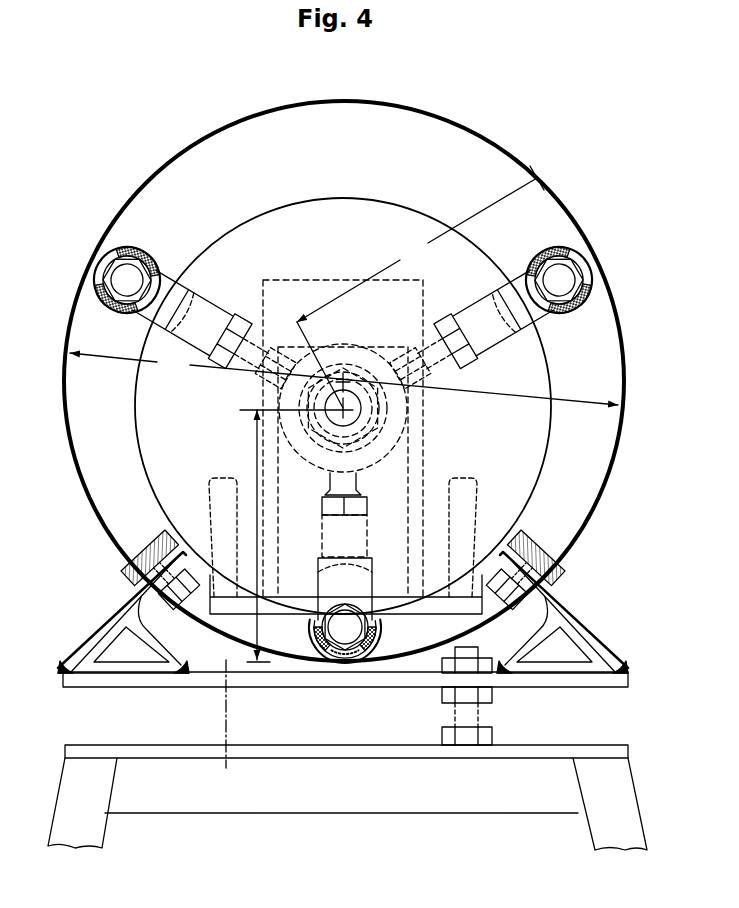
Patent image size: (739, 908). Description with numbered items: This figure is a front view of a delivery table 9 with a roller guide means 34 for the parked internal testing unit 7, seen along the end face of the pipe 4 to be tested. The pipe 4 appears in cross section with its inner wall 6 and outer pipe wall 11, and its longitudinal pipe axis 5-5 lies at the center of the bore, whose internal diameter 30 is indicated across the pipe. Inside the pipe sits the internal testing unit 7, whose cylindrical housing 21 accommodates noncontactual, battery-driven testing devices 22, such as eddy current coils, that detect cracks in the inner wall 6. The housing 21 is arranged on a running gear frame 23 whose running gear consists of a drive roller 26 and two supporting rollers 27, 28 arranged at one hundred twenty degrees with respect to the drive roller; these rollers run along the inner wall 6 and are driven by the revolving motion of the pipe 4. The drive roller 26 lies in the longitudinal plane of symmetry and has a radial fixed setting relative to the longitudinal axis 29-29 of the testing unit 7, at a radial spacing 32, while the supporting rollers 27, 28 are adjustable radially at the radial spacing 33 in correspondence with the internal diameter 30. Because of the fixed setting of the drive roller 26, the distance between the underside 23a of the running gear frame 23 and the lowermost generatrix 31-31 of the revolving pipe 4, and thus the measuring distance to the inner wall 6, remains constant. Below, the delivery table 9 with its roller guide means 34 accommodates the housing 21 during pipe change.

The pipe 4 is at (481, 134).
The inner wall 6 is at (452, 128).
The internal testing unit 7 is at (353, 192).
The delivery table 9 is at (300, 768).
The outer pipe wall 11 is at (589, 524).
The cylindrical housing 21 is at (275, 207).
The testing devices 22 is at (312, 280).
The running gear frame 23 is at (219, 607).
The underside of the running gear frame 23a is at (230, 620).
The drive roller 26 is at (378, 652).
The supporting roller 27 is at (126, 247).
The supporting roller 28 is at (594, 312).
The longitudinal axis of the testing unit 29-29 is at (356, 414).
The internal diameter 30 is at (344, 378).
The lowermost generatrix 31-31 is at (348, 657).
The radial spacing of the drive roller 32 is at (294, 536).
The radial spacing of the supporting rollers 33 is at (420, 287).
The roller guide means 34 is at (124, 581).
The longitudinal pipe axis 5-5 is at (343, 378).